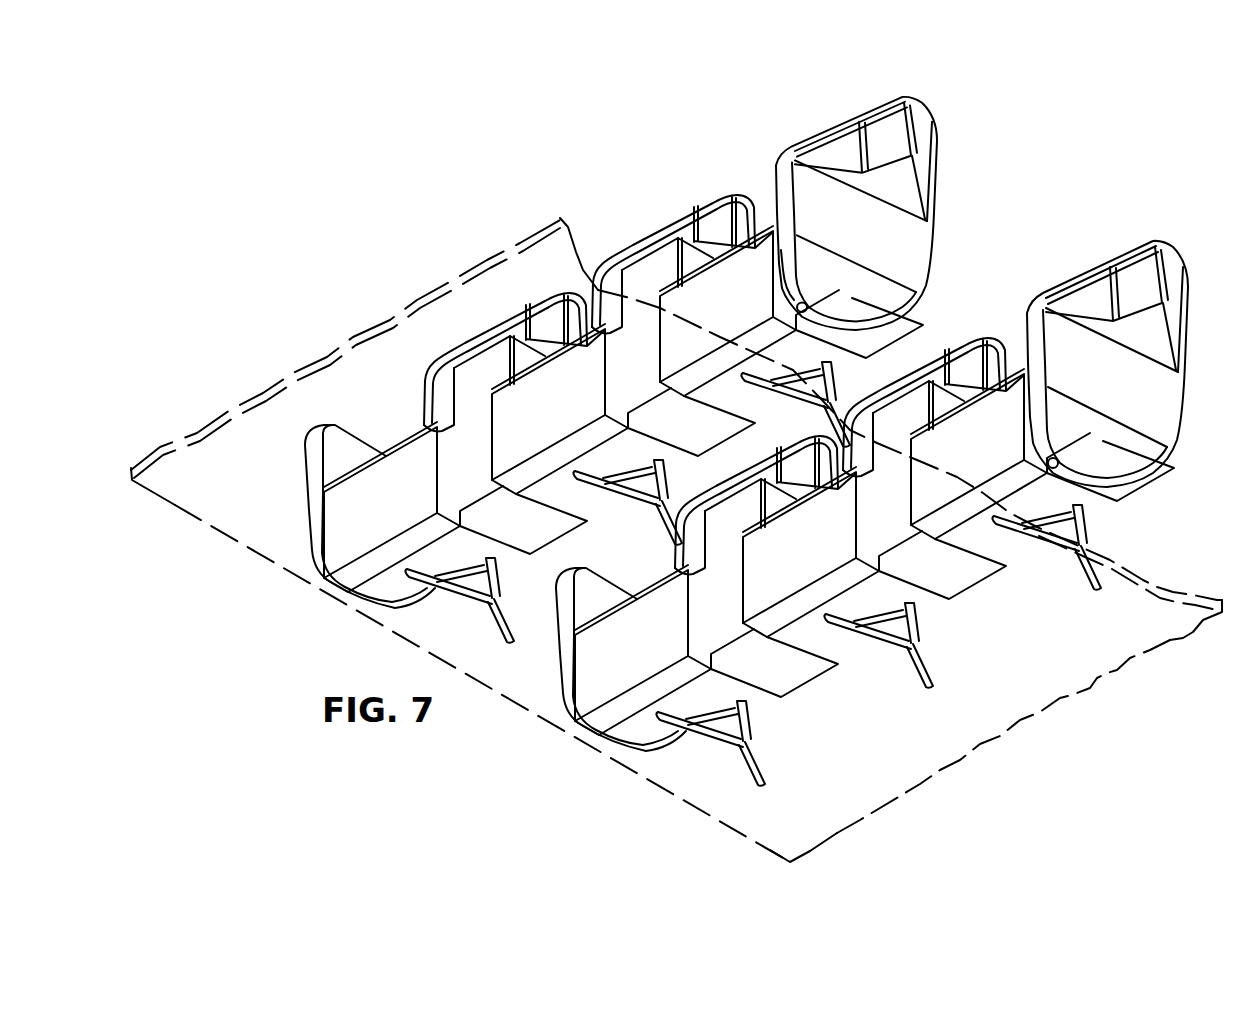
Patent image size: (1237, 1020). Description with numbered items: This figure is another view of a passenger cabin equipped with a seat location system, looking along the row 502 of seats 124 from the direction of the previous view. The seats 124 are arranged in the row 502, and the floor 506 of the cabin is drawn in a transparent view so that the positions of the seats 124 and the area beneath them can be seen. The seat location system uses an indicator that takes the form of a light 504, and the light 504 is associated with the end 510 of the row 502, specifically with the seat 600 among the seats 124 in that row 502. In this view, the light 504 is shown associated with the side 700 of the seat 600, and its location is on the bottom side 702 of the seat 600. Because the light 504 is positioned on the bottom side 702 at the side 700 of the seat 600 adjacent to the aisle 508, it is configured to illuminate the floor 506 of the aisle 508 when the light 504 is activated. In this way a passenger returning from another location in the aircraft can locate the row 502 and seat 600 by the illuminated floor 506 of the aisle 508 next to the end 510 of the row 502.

The seats 124 is at (524, 183).
The row 502 is at (944, 84).
The light 504 is at (780, 302).
The floor 506 is at (320, 365).
The aisle 508 is at (398, 393).
The end 510 is at (938, 150).
The seat 600 is at (890, 97).
The side 700 is at (937, 265).
The bottom side 702 is at (822, 322).